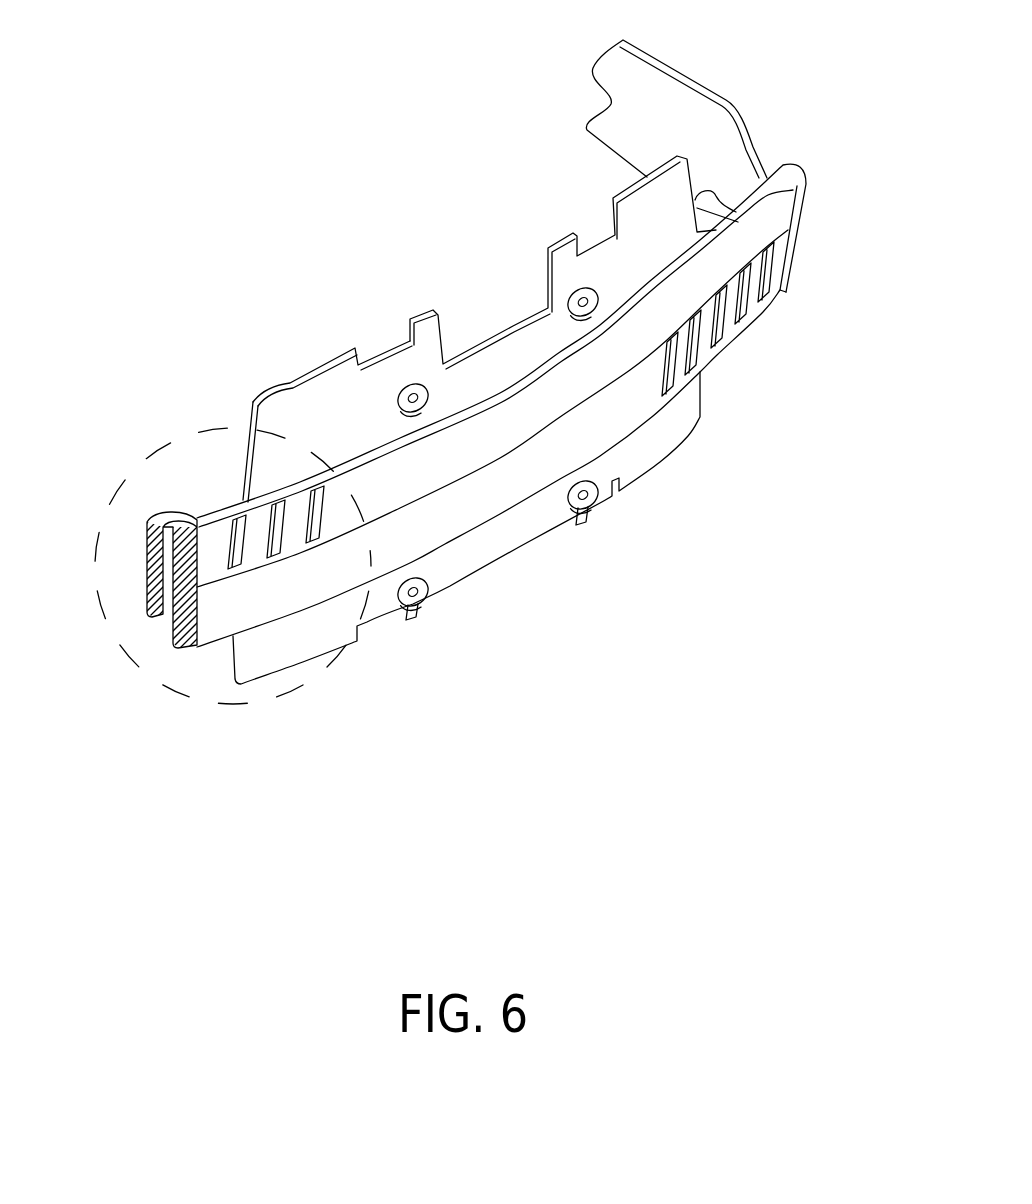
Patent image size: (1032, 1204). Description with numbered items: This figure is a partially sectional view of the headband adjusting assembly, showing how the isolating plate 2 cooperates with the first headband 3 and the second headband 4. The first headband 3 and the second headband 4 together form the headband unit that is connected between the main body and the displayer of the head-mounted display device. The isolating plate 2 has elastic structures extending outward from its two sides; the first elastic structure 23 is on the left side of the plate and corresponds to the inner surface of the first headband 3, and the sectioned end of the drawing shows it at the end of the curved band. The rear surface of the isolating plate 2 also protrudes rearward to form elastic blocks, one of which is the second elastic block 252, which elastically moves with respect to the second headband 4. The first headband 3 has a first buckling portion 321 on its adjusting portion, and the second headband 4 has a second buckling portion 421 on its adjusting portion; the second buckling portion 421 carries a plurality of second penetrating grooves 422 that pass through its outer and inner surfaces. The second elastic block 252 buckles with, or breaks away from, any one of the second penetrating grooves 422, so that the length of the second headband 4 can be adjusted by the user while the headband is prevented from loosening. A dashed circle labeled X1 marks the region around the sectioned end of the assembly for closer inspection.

The isolating plate 2 is at (520, 348).
The first headband 3 is at (420, 475).
The second headband 4 is at (509, 497).
The first elastic structure 23 is at (130, 589).
The second elastic block 252 is at (746, 306).
The first buckling portion 321 is at (216, 490).
The second buckling portion 421 is at (822, 264).
The second penetrating grooves 422 is at (723, 338).
The detail region X1 is at (290, 700).